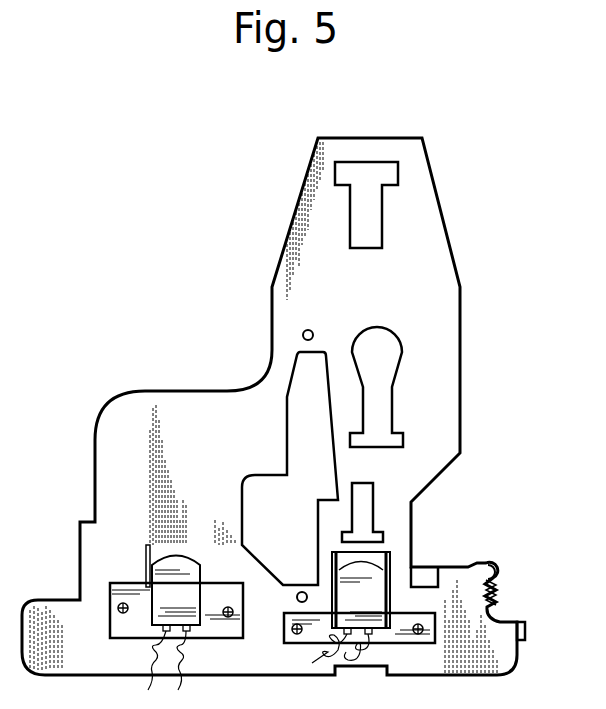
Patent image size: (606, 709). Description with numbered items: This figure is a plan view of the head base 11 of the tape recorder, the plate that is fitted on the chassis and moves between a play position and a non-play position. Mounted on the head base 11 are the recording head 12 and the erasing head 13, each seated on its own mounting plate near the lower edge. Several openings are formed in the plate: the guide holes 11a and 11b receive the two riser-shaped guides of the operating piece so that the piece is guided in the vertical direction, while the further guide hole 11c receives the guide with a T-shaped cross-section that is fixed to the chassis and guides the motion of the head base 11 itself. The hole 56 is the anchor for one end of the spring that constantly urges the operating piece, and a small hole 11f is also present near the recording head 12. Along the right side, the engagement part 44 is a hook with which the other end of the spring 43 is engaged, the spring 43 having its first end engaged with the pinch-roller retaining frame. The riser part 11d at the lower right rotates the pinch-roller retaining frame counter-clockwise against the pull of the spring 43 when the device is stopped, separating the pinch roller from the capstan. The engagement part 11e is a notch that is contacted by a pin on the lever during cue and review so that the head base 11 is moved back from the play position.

The head base 11 is at (460, 365).
The guide hole 11a is at (386, 419).
The guide hole 11b is at (372, 517).
The guide hole 11c is at (379, 229).
The riser part 11d is at (526, 632).
The engagement part 11e is at (428, 579).
The hole 11f is at (300, 592).
The recording head 12 is at (373, 604).
The erasing head 13 is at (187, 600).
The spring 43 is at (494, 590).
The engagement part 44 is at (497, 567).
The hole 56 is at (312, 332).